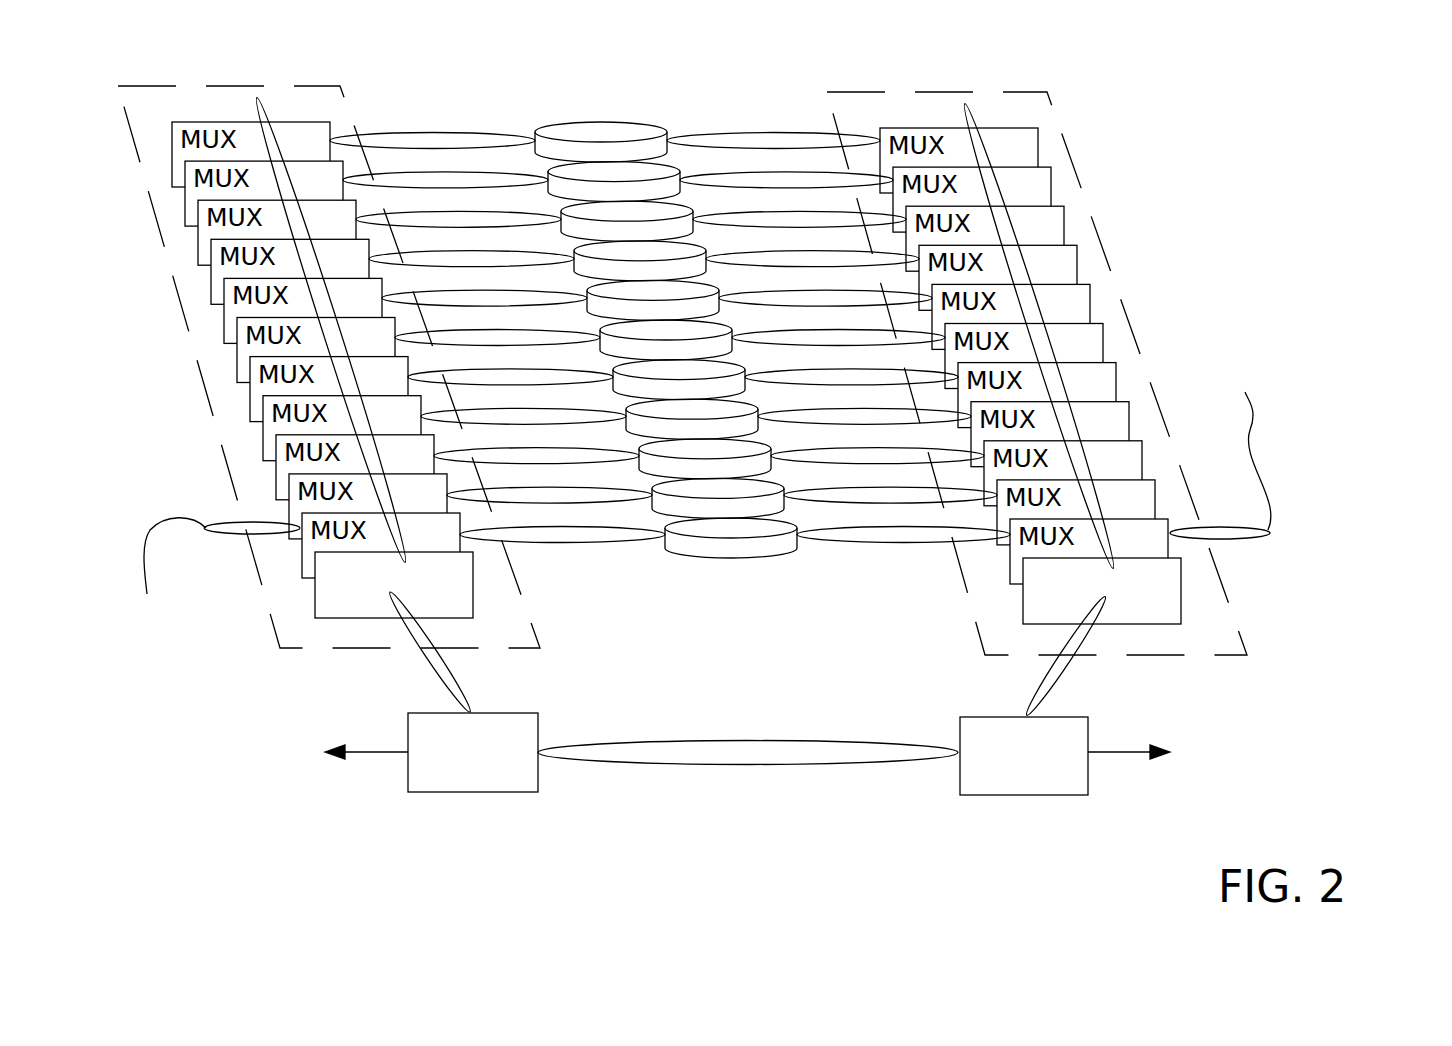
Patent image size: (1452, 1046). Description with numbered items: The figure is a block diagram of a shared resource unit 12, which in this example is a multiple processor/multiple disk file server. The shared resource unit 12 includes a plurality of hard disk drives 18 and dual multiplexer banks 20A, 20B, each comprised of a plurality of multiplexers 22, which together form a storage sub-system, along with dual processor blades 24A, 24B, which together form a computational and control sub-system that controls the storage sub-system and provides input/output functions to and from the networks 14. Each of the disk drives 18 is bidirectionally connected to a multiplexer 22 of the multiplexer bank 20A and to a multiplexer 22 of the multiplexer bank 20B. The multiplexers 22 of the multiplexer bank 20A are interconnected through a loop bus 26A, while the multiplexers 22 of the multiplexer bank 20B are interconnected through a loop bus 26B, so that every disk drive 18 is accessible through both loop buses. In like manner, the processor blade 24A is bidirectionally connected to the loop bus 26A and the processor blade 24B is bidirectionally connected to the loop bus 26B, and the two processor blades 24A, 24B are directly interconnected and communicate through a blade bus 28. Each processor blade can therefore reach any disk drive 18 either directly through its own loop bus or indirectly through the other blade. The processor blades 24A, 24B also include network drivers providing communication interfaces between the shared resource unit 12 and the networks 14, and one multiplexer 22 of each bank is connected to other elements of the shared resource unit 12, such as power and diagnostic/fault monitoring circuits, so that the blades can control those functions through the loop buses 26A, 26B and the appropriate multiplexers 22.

The shared resource unit 12 is at (767, 446).
The networks 14 is at (744, 753).
The hard disk drives 18 is at (602, 92).
The multiplexer bank 20A is at (156, 228).
The multiplexer bank 20B is at (1083, 189).
The multiplexer 22 is at (200, 367).
The processor blade 24A is at (510, 793).
The processor blade 24B is at (988, 795).
The loop bus 26A is at (258, 103).
The loop bus 26B is at (963, 108).
The blade bus 28 is at (768, 740).